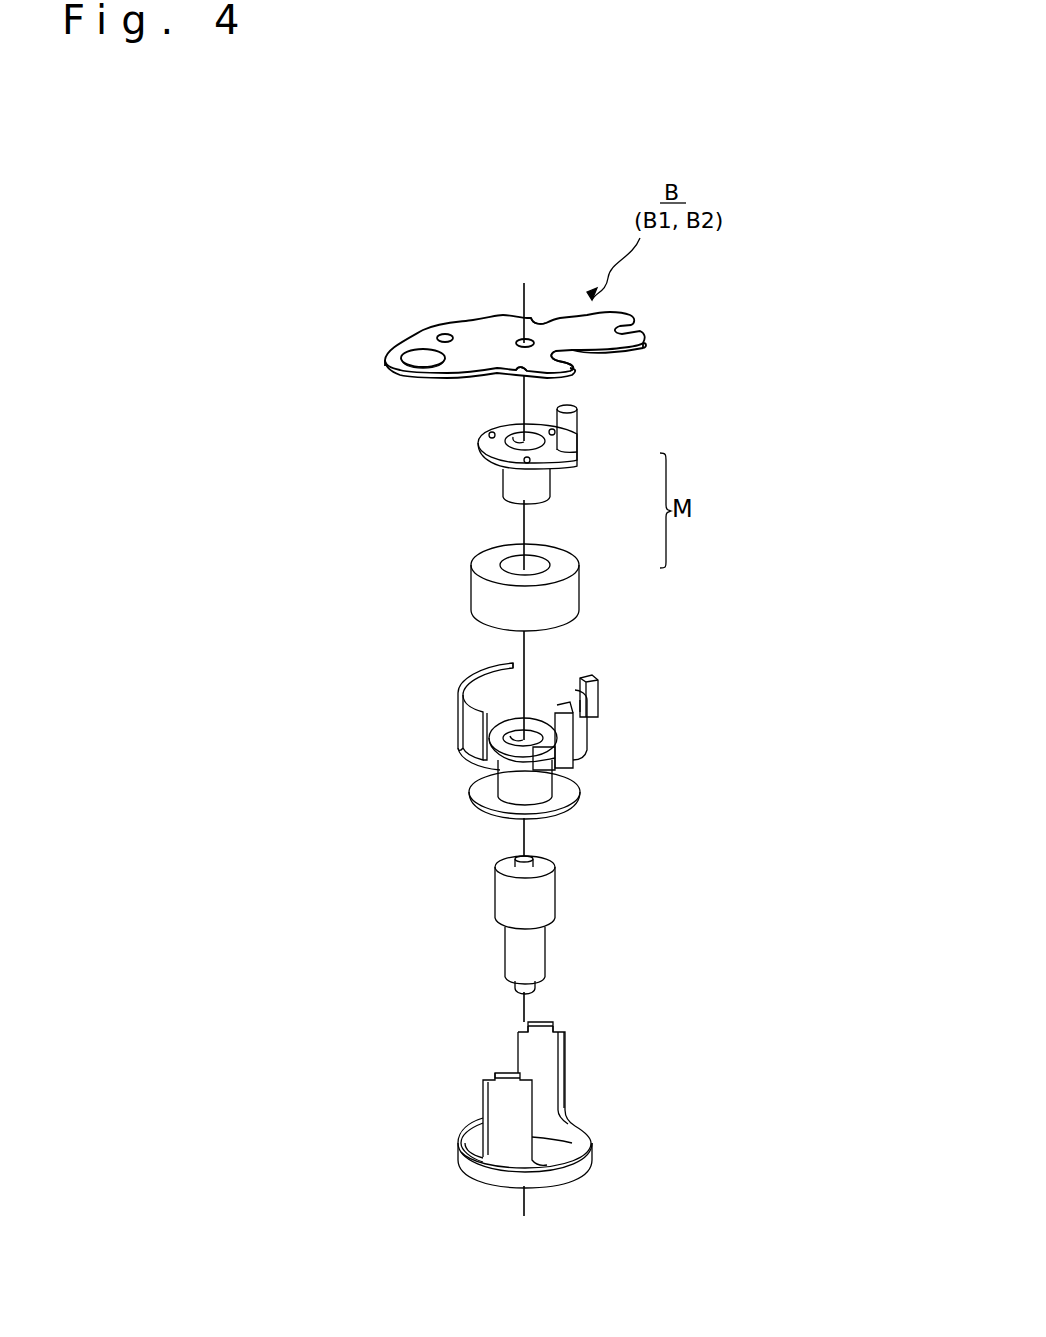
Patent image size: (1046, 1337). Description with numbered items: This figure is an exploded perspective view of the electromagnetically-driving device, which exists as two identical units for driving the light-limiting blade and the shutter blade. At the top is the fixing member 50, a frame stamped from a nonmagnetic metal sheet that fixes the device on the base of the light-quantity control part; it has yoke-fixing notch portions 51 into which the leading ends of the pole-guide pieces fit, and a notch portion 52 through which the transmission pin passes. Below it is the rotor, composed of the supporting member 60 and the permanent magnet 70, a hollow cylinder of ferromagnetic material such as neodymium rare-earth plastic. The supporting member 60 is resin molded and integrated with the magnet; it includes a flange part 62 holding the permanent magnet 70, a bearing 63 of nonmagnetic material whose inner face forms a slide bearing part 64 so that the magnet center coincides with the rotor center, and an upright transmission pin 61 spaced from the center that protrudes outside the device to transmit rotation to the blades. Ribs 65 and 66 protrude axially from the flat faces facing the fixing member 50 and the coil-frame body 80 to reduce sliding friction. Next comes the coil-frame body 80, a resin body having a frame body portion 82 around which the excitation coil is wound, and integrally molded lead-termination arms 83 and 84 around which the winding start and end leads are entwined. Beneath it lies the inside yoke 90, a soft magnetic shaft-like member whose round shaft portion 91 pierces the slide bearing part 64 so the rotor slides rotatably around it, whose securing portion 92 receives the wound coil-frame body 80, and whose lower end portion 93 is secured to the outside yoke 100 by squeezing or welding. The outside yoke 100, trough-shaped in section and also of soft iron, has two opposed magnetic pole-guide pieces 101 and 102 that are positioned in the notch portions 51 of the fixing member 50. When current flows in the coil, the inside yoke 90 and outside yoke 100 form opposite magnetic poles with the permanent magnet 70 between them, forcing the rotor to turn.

The frame member (fixing member) 50 is at (633, 325).
The yoke-fixing notch portions 51 is at (530, 318).
The notch portion 52 is at (575, 352).
The holder member (supporting member) 60 is at (543, 467).
The transmission pin 61 is at (572, 434).
The flange part 62 is at (492, 460).
The bearing 63 is at (543, 484).
The slide bearing part 64 is at (516, 444).
The rib 65 is at (484, 440).
The rib 66 is at (503, 500).
The permanent magnet 70 is at (585, 582).
The coil-frame body 80 is at (543, 732).
The frame body portion 82 is at (492, 779).
The lead-termination arm 83 is at (570, 757).
The lead-termination arm 84 is at (598, 698).
The inside yoke 90 is at (549, 925).
The shaft portion 91 is at (542, 890).
The securing portion 92 is at (512, 946).
The lower end portion 93 is at (512, 985).
The outside yoke 100 is at (538, 1097).
The magnetic pole-guide piece 101 is at (495, 1093).
The magnetic pole-guide piece 102 is at (560, 1058).